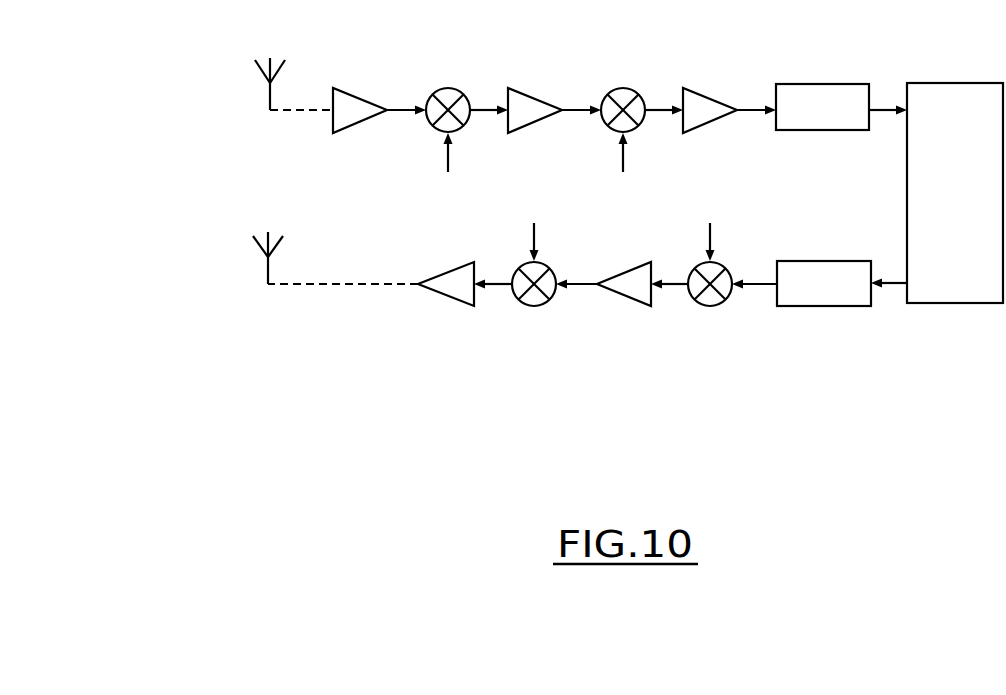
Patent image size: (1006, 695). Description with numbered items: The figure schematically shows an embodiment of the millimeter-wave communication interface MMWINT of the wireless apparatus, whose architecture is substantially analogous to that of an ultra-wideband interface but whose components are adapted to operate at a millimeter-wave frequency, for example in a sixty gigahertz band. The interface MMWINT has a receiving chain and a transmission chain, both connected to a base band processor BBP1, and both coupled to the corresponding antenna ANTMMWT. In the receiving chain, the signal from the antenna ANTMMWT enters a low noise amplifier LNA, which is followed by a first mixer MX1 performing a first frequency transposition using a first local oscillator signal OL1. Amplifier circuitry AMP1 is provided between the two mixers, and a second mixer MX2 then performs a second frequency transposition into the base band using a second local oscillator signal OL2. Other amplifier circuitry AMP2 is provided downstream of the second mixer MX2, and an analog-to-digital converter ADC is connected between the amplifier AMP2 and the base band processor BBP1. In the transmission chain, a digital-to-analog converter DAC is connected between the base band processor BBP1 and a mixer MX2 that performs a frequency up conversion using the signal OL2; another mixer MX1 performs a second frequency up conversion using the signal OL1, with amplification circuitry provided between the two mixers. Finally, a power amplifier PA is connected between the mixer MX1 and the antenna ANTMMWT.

The millimeter-wave communication interface MMWINT is at (636, 404).
The antenna ANTMMWT is at (270, 96).
The low noise amplifier LNA is at (362, 89).
The first mixer MX1 is at (450, 88).
The amplifier means or circuitry AMP1 is at (537, 87).
The second mixer MX2 is at (625, 88).
The other amplifier means or circuitry AMP2 is at (714, 87).
The analog-to-digital converter ADC is at (822, 107).
The base band processor BBP1 is at (955, 193).
The digital-to-analog converter DAC is at (824, 283).
The power amplifier PA is at (450, 305).
The first local oscillator signal OL1 is at (491, 197).
The second local oscillator signal OL2 is at (666, 197).